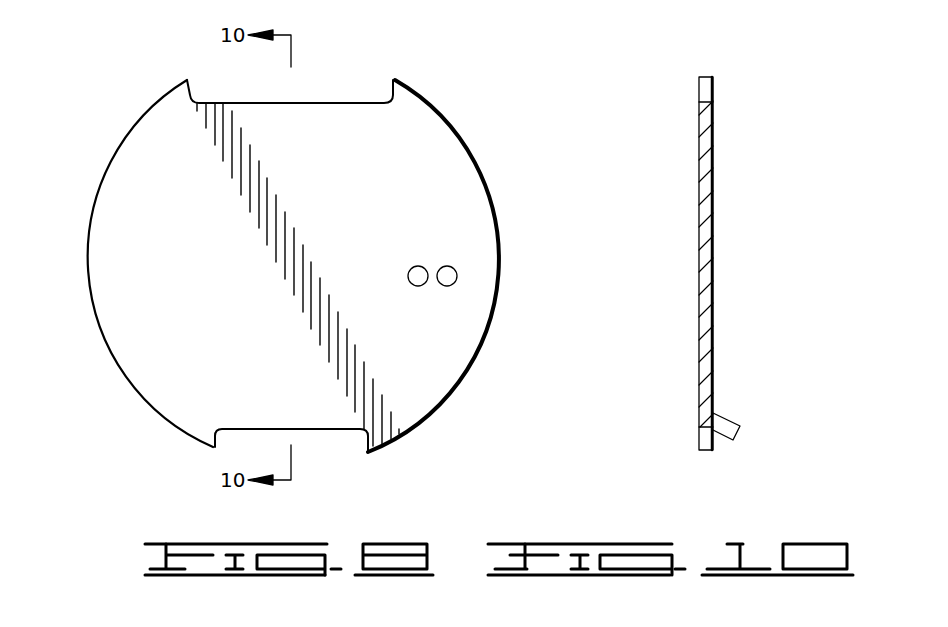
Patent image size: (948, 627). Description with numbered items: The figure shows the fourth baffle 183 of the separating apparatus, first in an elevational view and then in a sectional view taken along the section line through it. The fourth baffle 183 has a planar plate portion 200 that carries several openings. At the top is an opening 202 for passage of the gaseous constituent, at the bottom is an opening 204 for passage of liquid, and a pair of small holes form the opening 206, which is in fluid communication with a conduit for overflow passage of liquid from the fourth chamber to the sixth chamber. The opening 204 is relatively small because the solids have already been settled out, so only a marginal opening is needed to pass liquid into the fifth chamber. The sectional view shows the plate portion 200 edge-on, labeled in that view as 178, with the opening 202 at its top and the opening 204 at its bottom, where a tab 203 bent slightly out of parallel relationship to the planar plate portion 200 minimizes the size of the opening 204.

In FIG. 9, the fourth baffle 183 is at (152, 105).
In FIG. 9, the planar plate portion 200 is at (430, 170).
In FIG. 9, the opening 202 is at (335, 90).
In FIG. 10, the opening 202 is at (700, 86).
In FIG. 9, the opening 204 is at (333, 438).
In FIG. 10, the opening 204 is at (700, 437).
In FIG. 9, the opening 206 is at (418, 286).
In FIG. 10, the plate 178 is at (713, 137).
In FIG. 10, the tab 203 is at (724, 418).